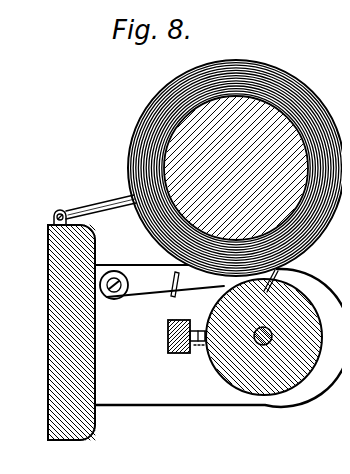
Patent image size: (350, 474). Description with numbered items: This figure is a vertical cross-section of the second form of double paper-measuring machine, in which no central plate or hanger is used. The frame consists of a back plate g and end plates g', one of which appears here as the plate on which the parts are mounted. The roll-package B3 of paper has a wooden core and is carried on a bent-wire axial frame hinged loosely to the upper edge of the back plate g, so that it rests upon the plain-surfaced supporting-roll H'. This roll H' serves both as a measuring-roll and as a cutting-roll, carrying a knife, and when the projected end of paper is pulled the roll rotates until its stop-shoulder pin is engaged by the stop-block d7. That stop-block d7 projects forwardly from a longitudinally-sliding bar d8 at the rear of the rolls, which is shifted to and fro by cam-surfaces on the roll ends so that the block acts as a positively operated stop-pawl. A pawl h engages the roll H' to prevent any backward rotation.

The roll-package B3 is at (269, 67).
The back plate g is at (60, 325).
The end plate g' is at (218, 338).
The pawl h is at (184, 283).
The stop-block d7 is at (186, 322).
The longitudinally-sliding bar d8 is at (168, 336).
The supporting-roll H' is at (264, 332).